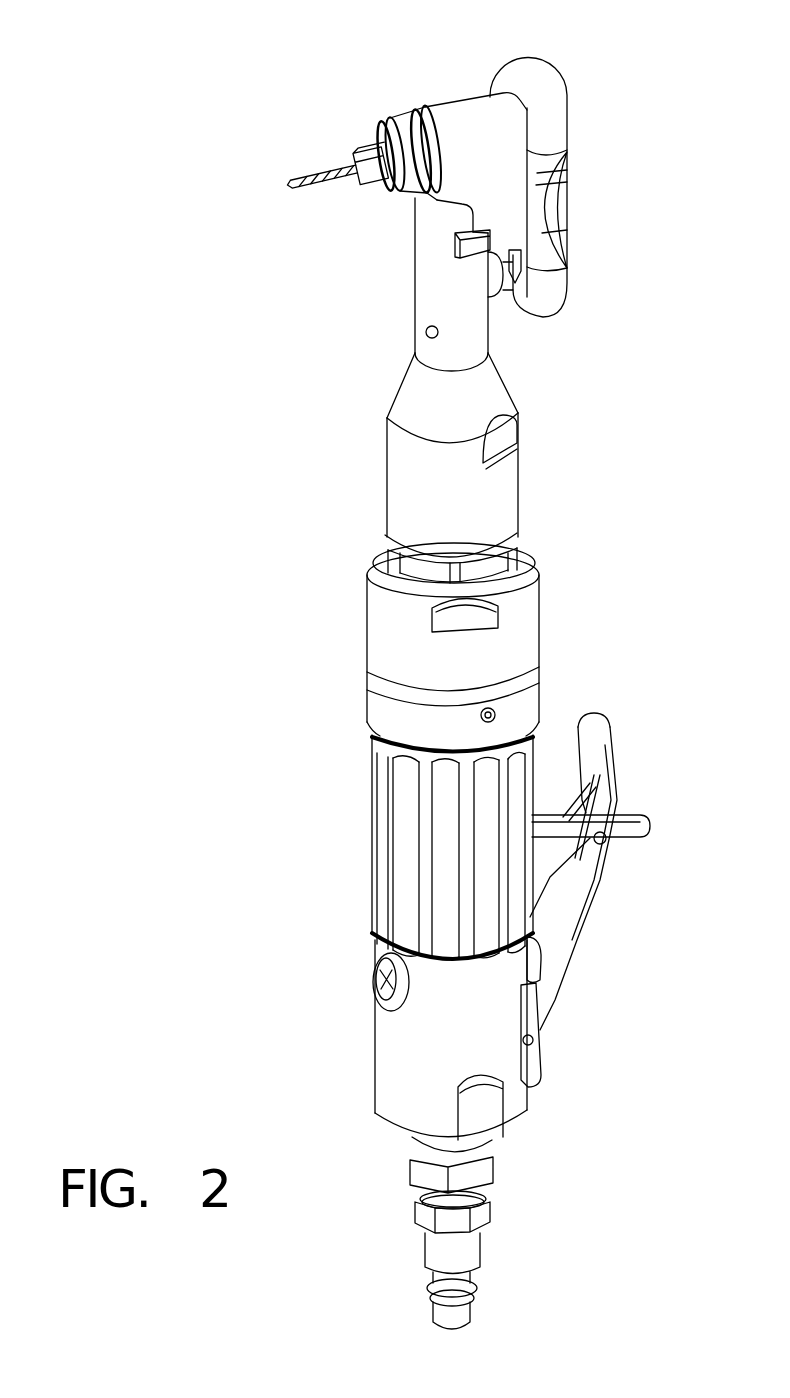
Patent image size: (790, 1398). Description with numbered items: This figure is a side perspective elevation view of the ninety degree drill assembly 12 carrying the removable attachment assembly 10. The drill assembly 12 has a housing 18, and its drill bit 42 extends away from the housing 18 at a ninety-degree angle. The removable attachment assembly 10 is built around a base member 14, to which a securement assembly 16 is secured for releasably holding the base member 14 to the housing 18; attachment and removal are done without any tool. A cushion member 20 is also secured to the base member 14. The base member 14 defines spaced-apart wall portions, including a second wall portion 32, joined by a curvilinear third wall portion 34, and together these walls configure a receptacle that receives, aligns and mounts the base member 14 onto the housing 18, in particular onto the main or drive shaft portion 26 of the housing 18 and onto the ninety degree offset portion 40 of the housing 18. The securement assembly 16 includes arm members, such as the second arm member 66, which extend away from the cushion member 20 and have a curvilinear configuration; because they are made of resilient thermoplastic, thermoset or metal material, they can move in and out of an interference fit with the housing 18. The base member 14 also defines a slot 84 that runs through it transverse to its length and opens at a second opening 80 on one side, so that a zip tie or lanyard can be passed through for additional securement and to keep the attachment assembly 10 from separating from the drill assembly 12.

The removable attachment assembly 10 is at (478, 88).
The ninety degree drill assembly 12 is at (547, 599).
The base member 14 is at (440, 122).
The securement assembly 16 is at (474, 268).
The housing 18 is at (474, 350).
The cushion member 20 is at (545, 112).
The drive shaft portion 26 is at (412, 274).
The second wall portion 32 is at (492, 170).
The third wall portion 34 is at (465, 113).
The ninety degree offset portion 40 is at (417, 190).
The drill bit 42 is at (318, 162).
The second arm member 66 is at (452, 250).
The second opening 80 is at (517, 307).
The slot 84 is at (520, 258).